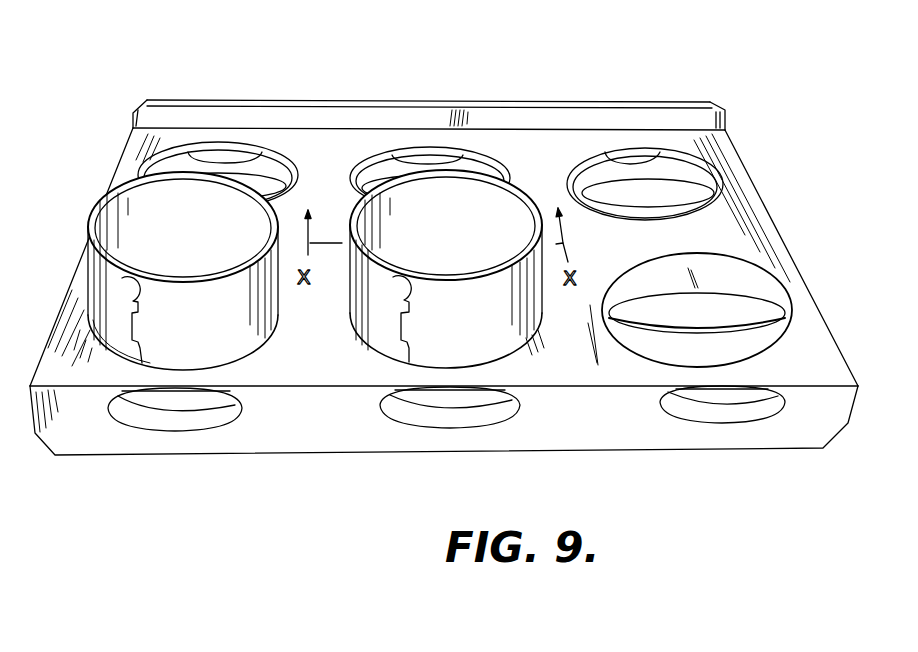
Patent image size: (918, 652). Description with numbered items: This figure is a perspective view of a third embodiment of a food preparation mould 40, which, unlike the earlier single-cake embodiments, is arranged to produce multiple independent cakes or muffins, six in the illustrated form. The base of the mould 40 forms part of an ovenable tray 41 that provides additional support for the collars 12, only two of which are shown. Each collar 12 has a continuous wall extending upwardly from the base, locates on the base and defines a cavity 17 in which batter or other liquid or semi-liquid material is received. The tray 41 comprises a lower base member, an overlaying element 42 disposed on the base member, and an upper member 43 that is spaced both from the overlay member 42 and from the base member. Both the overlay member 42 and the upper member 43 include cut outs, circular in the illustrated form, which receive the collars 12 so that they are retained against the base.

The third embodiment of the mould 40 is at (444, 284).
The tray 41 is at (545, 183).
The overlaying element 42 is at (175, 457).
The upper member 43 is at (755, 238).
The collar 12 is at (388, 321).
The cavity 17 is at (309, 270).